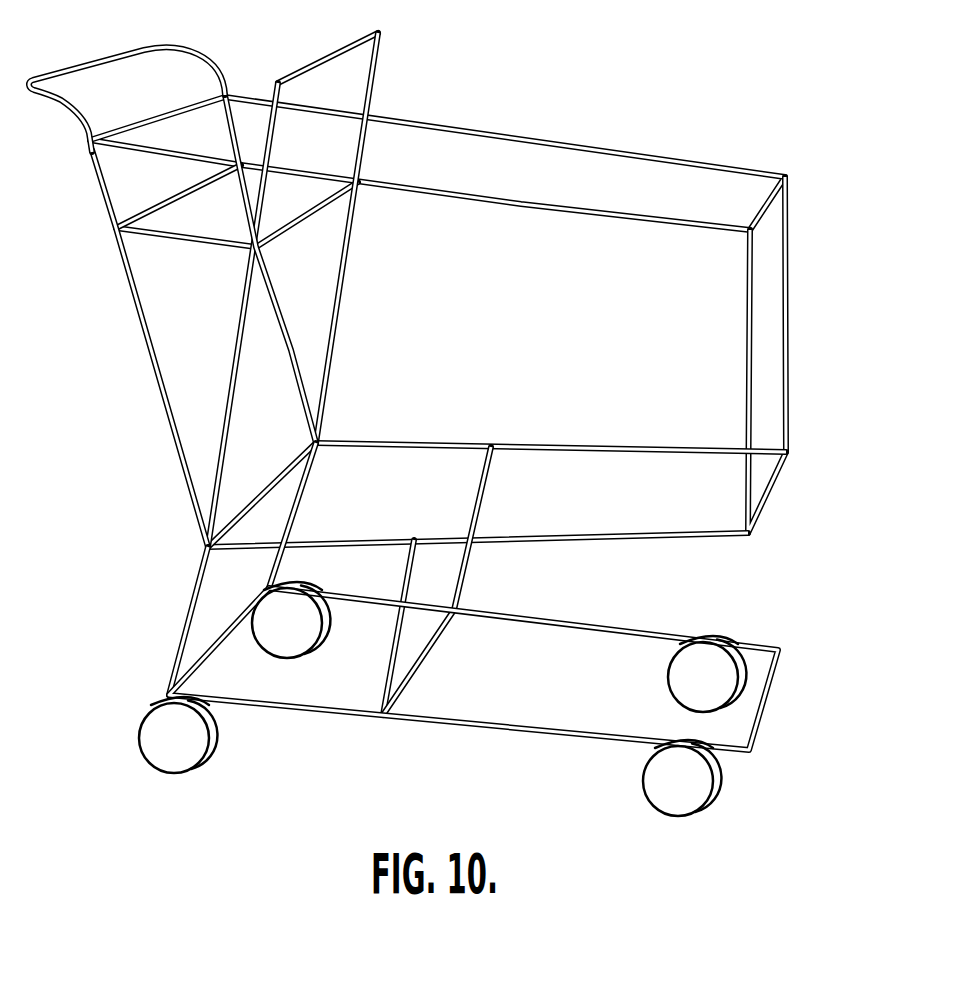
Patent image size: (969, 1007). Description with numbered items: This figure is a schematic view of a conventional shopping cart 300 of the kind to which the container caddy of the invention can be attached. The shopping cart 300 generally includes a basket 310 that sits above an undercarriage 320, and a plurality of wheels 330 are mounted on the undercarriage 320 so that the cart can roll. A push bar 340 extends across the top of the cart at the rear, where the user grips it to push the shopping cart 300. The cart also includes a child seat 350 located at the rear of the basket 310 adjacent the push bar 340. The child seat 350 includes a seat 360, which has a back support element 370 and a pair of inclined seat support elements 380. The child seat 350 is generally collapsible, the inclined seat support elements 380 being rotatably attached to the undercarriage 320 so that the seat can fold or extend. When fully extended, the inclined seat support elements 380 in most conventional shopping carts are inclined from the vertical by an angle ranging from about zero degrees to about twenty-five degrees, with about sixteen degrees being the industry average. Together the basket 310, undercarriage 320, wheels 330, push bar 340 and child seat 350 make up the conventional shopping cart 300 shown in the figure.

The shopping cart 300 is at (446, 412).
The basket 310 is at (600, 352).
The undercarriage 320 is at (772, 698).
The wheels 330 is at (288, 623).
The push bar 340 is at (88, 67).
The child seat 350 is at (112, 232).
The seat 360 is at (230, 227).
The back support element 370 is at (303, 72).
The inclined seat support elements 380 is at (225, 370).